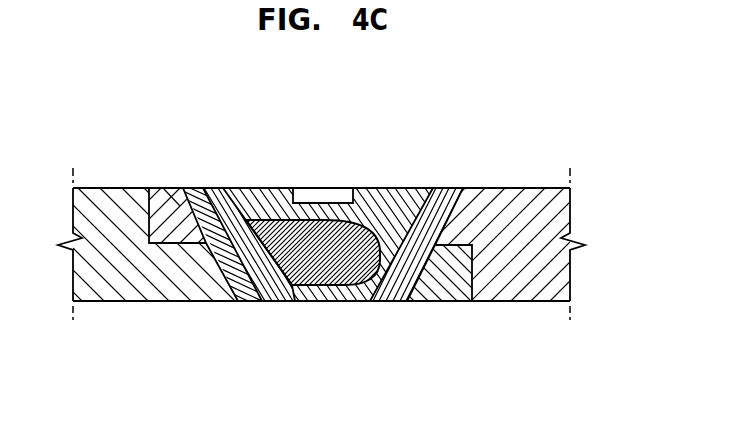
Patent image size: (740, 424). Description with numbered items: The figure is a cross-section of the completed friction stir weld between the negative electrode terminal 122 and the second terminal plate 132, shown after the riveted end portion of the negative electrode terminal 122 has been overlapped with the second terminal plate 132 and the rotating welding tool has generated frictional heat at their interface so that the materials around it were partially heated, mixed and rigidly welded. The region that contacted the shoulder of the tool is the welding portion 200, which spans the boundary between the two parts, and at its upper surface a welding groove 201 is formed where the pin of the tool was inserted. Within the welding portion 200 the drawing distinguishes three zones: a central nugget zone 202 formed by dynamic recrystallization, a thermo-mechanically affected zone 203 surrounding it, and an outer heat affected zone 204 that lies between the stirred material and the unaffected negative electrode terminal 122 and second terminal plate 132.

The negative electrode terminal 122 is at (520, 290).
The second terminal plate 132 is at (163, 290).
The welding portion 200 is at (323, 220).
The welding groove 201 is at (322, 200).
The nugget zone 202 is at (368, 233).
The thermo-mechanically affected zone 203 is at (416, 197).
The heat affected zone 204 is at (253, 288).